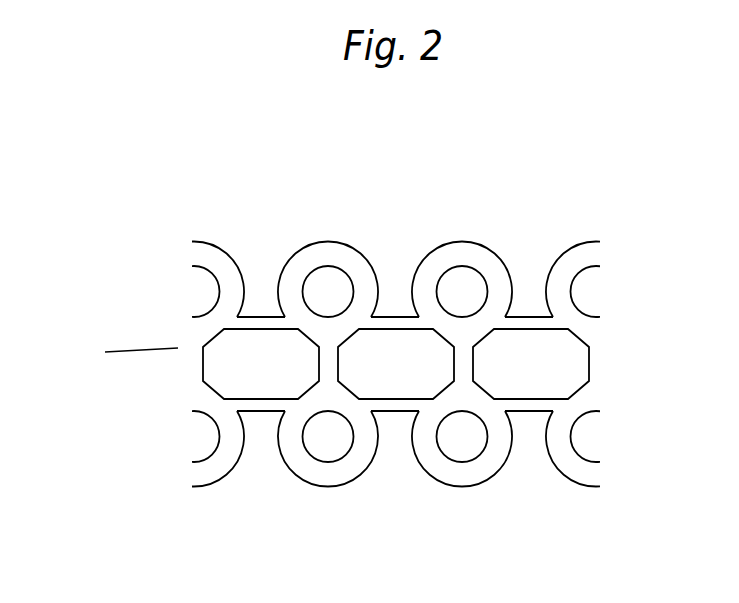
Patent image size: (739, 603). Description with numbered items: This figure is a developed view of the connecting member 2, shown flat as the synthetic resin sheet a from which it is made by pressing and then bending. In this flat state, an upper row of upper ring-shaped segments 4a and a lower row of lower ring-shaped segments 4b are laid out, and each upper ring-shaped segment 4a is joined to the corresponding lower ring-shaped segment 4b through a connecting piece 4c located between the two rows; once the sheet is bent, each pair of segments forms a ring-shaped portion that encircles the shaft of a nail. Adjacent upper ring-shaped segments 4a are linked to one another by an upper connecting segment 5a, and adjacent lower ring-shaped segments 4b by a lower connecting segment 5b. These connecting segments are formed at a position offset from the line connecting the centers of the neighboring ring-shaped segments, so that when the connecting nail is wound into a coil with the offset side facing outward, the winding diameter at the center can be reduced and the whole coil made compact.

The connecting member 2 is at (540, 243).
The upper ring-shaped segment 4a is at (328, 256).
The lower ring-shaped segment 4b is at (337, 475).
The connecting piece 4c is at (328, 364).
The upper connecting segment 5a is at (395, 316).
The lower connecting segment 5b is at (388, 411).
The synthetic resin sheet a is at (165, 341).